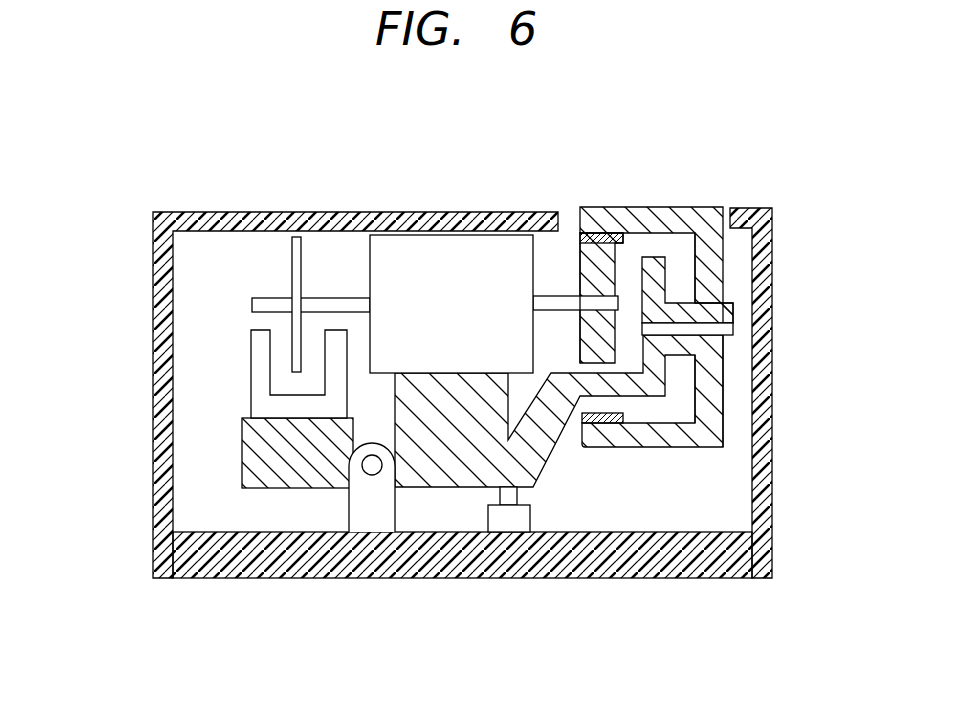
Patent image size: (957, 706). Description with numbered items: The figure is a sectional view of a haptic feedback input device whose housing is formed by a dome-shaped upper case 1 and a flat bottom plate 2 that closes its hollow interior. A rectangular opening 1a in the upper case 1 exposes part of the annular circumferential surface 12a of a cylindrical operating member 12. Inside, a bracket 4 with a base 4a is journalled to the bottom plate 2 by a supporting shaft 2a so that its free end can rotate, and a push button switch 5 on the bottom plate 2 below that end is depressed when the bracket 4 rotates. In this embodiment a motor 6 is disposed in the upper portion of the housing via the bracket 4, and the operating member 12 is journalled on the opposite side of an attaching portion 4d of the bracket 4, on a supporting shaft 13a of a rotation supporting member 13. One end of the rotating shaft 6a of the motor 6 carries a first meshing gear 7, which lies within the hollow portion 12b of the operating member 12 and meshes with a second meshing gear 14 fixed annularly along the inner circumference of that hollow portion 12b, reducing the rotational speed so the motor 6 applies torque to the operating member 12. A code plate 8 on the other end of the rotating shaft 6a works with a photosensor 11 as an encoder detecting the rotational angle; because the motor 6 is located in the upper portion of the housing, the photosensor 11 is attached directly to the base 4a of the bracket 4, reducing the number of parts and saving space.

The upper case 1 is at (434, 338).
The opening 1a is at (725, 208).
The bottom plate 2 is at (191, 588).
The supporting shaft 2a is at (366, 472).
The bracket 4 is at (274, 498).
The base 4a is at (447, 475).
The attaching portion 4d is at (715, 368).
The push button switch 5 is at (512, 522).
The motor 6 is at (387, 243).
The rotating shaft 6a is at (343, 298).
The first meshing gear 7 is at (592, 277).
The code plate 8 is at (293, 265).
The photosensor 11 is at (260, 378).
The operating member 12 is at (732, 251).
The circumferential surface 12a is at (638, 206).
The hollow portion 12b is at (689, 247).
The rotation supporting member 13 is at (748, 302).
The supporting shaft 13a is at (723, 285).
The second meshing gear 14 is at (604, 229).